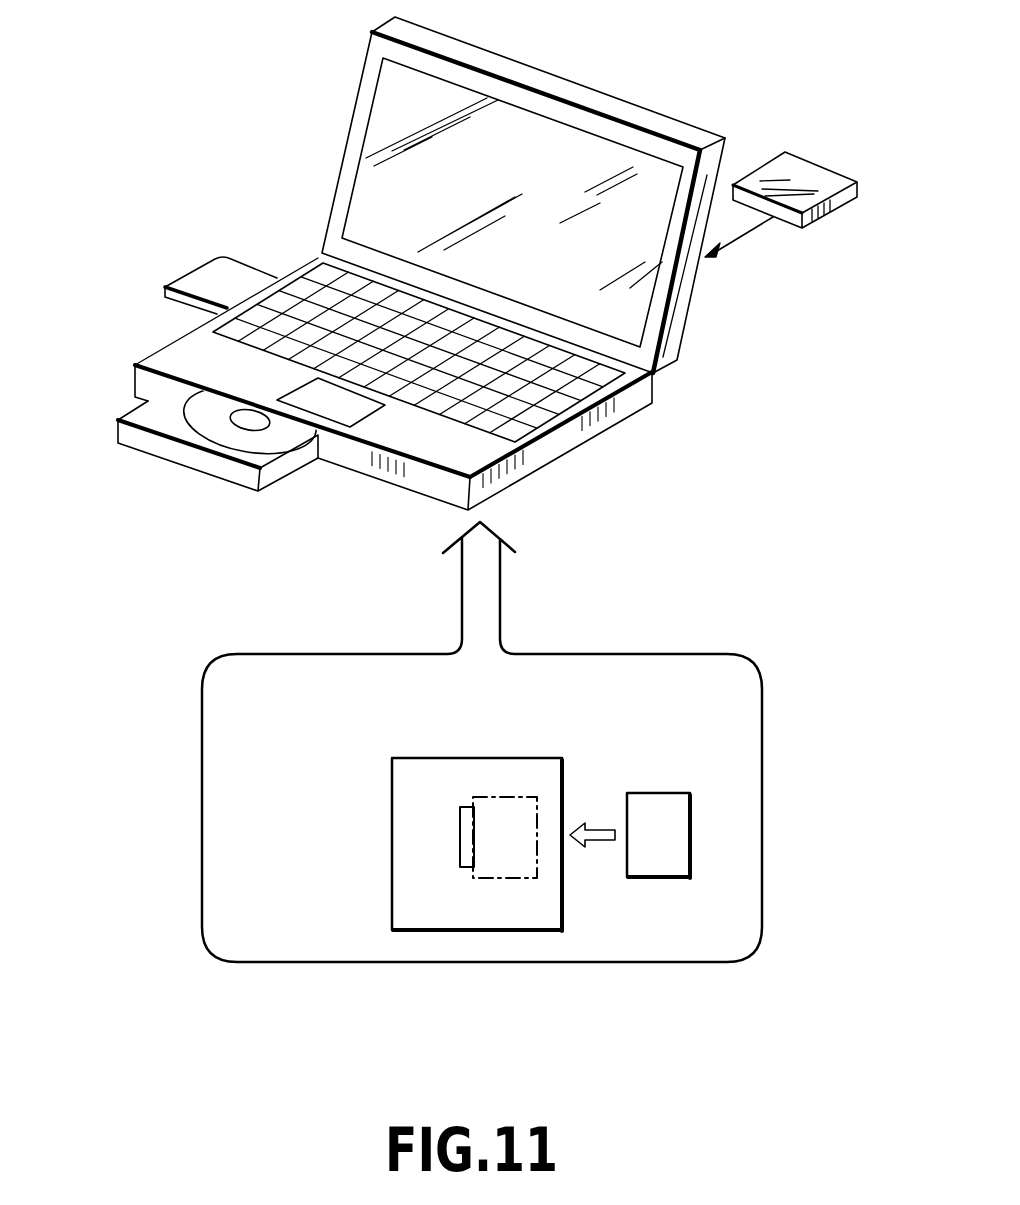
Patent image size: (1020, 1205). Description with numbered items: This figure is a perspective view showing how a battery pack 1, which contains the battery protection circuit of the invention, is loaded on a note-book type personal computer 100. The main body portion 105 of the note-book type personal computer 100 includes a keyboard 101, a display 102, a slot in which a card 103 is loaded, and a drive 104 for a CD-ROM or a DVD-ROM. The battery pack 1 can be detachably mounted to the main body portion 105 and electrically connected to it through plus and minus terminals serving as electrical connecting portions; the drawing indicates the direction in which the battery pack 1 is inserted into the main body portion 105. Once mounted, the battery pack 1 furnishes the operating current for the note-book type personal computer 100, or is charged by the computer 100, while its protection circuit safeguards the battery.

The battery pack 1 is at (802, 175).
The note-book type personal computer 100 is at (452, 465).
The keyboard 101 is at (317, 278).
The display 102 is at (387, 117).
The card 103 is at (203, 280).
The drive 104 is at (205, 410).
The main body portion 105 is at (565, 440).